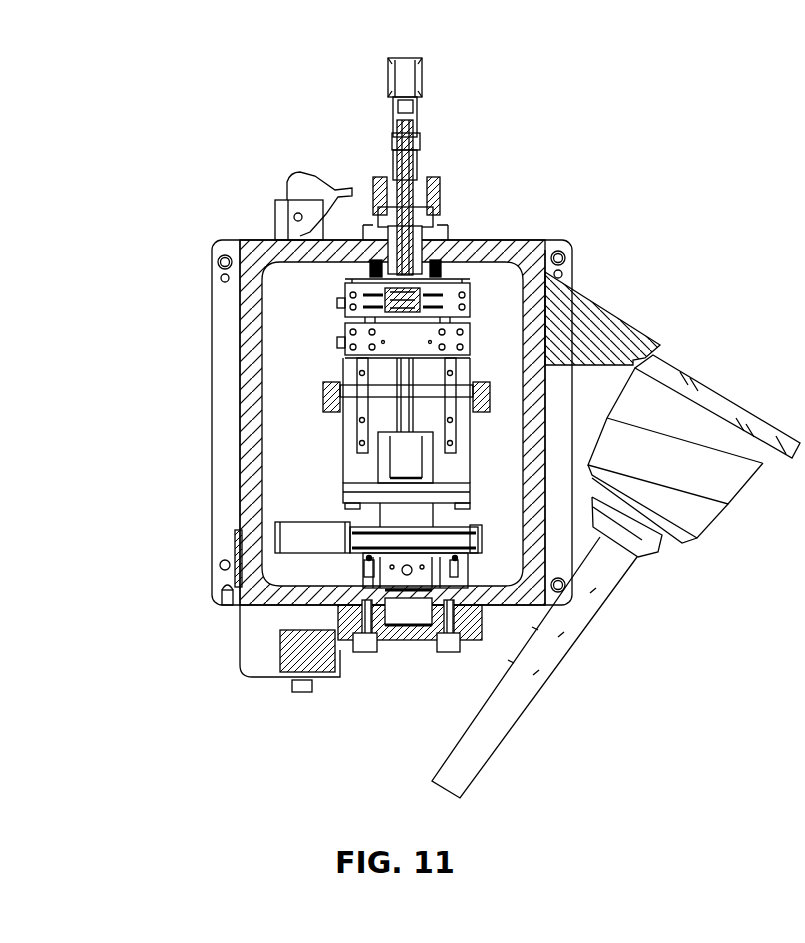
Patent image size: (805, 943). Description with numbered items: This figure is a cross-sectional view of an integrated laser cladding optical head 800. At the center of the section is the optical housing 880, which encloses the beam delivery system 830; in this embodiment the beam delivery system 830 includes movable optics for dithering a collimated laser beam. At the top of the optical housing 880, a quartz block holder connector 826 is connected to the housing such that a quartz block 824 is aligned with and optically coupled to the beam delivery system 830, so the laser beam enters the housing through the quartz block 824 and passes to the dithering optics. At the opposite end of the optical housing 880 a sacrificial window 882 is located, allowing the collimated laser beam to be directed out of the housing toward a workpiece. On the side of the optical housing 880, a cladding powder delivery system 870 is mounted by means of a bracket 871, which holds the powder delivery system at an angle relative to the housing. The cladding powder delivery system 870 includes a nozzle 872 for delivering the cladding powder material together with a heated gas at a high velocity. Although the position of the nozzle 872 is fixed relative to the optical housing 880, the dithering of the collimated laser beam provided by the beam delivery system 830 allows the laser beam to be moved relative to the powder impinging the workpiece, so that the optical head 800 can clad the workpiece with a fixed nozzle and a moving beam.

The integrated laser cladding optical head 800 is at (288, 126).
The quartz block holder (QBH) connector 826 is at (452, 191).
The optical housing 880 is at (497, 252).
The quartz block 824 is at (400, 272).
The bracket 871 is at (604, 320).
The beam delivery system 830 is at (288, 445).
The cladding powder delivery system 870 is at (708, 549).
The sacrificial window 882 is at (436, 625).
The nozzle 872 is at (500, 705).